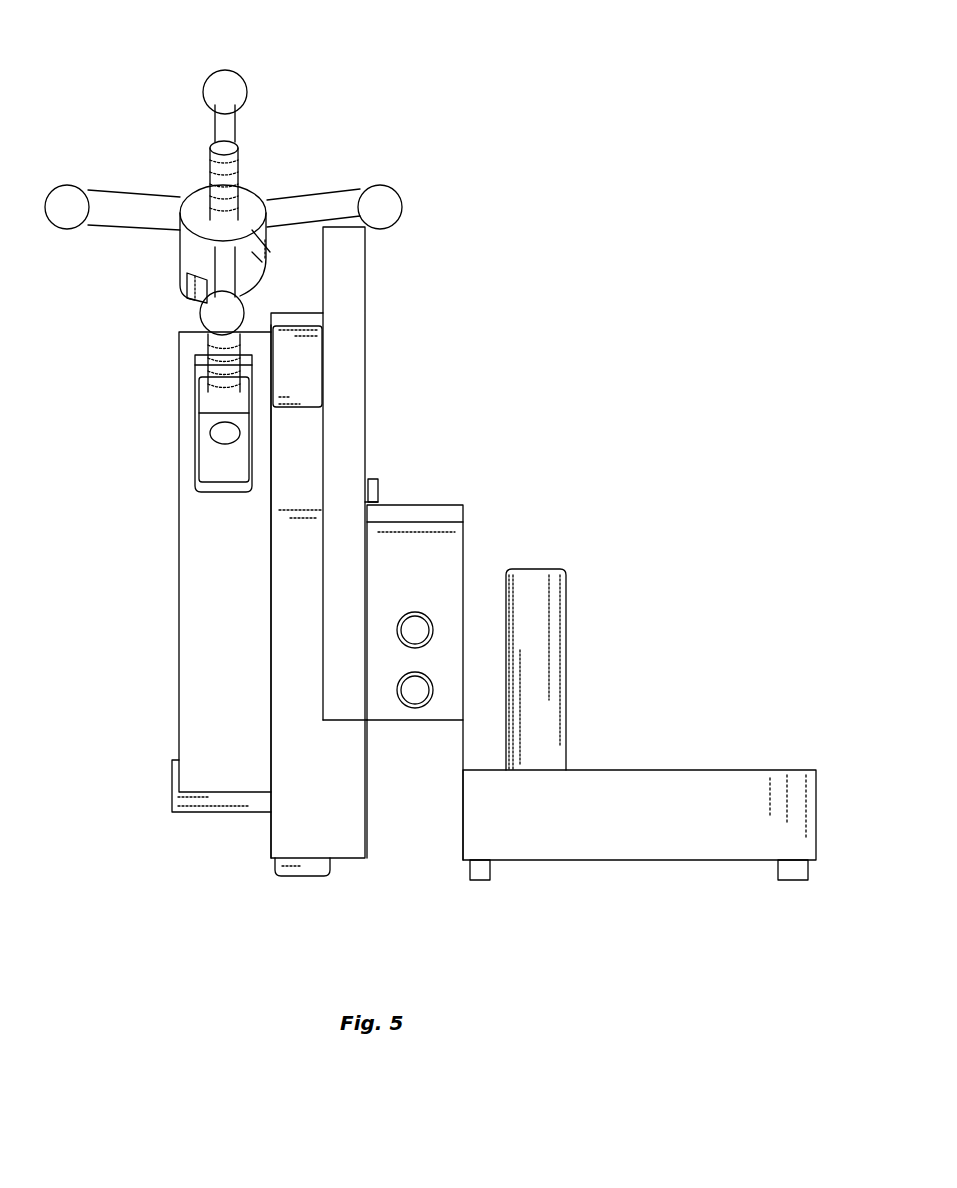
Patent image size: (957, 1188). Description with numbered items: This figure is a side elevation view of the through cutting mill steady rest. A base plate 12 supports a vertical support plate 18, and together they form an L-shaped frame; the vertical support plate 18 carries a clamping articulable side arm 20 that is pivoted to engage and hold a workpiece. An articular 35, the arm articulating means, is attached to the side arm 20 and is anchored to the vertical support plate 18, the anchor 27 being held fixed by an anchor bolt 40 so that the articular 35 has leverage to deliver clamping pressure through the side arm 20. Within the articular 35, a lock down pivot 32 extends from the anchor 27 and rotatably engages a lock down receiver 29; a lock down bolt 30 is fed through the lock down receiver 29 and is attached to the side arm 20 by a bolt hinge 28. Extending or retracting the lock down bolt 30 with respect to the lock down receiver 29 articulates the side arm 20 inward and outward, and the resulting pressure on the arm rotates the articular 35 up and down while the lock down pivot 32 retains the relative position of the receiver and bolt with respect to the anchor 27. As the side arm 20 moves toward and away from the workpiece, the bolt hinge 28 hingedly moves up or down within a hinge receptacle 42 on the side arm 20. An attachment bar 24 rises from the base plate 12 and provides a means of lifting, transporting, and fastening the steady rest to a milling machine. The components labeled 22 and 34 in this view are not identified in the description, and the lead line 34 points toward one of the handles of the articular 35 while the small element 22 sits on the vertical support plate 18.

The base plate 12 is at (714, 793).
The vertical support plate 18 is at (295, 753).
The side arm 20 is at (195, 635).
The switch 22 is at (378, 490).
The attachment bar 24 is at (560, 634).
The anchor 27 is at (440, 545).
The bolt hinge 28 is at (210, 452).
The lock down receiver 29 is at (190, 190).
The lock down bolt 30 is at (232, 190).
The lock down pivot 32 is at (190, 290).
The handle arm 34 is at (383, 200).
The articular 35 is at (247, 211).
The anchor bolt 40 is at (418, 628).
The hinge receptacle 42 is at (200, 487).